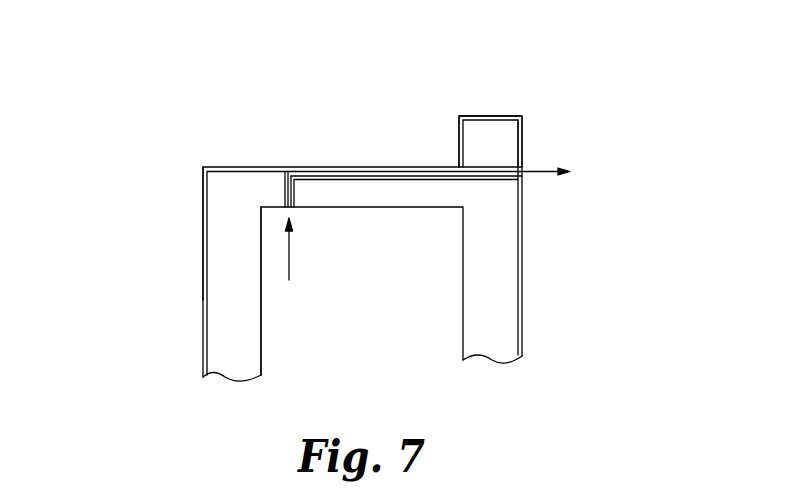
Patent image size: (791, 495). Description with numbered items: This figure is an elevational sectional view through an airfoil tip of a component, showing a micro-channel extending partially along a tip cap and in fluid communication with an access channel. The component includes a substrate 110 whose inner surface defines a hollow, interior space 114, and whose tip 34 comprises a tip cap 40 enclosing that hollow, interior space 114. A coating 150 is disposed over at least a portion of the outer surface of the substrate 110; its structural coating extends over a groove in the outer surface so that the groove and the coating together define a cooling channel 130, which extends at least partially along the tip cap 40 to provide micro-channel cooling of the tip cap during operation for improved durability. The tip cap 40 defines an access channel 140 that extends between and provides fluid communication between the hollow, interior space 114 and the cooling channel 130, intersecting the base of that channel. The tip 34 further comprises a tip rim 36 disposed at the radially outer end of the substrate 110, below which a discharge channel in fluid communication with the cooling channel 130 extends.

The tip 34 is at (542, 106).
The tip rim 36 is at (492, 148).
The tip cap 40 is at (321, 185).
The substrate 110 is at (490, 269).
The hollow interior space 114 is at (282, 327).
The cooling channel 130 is at (393, 172).
The access channel 140 is at (293, 190).
The coating 150 is at (203, 295).